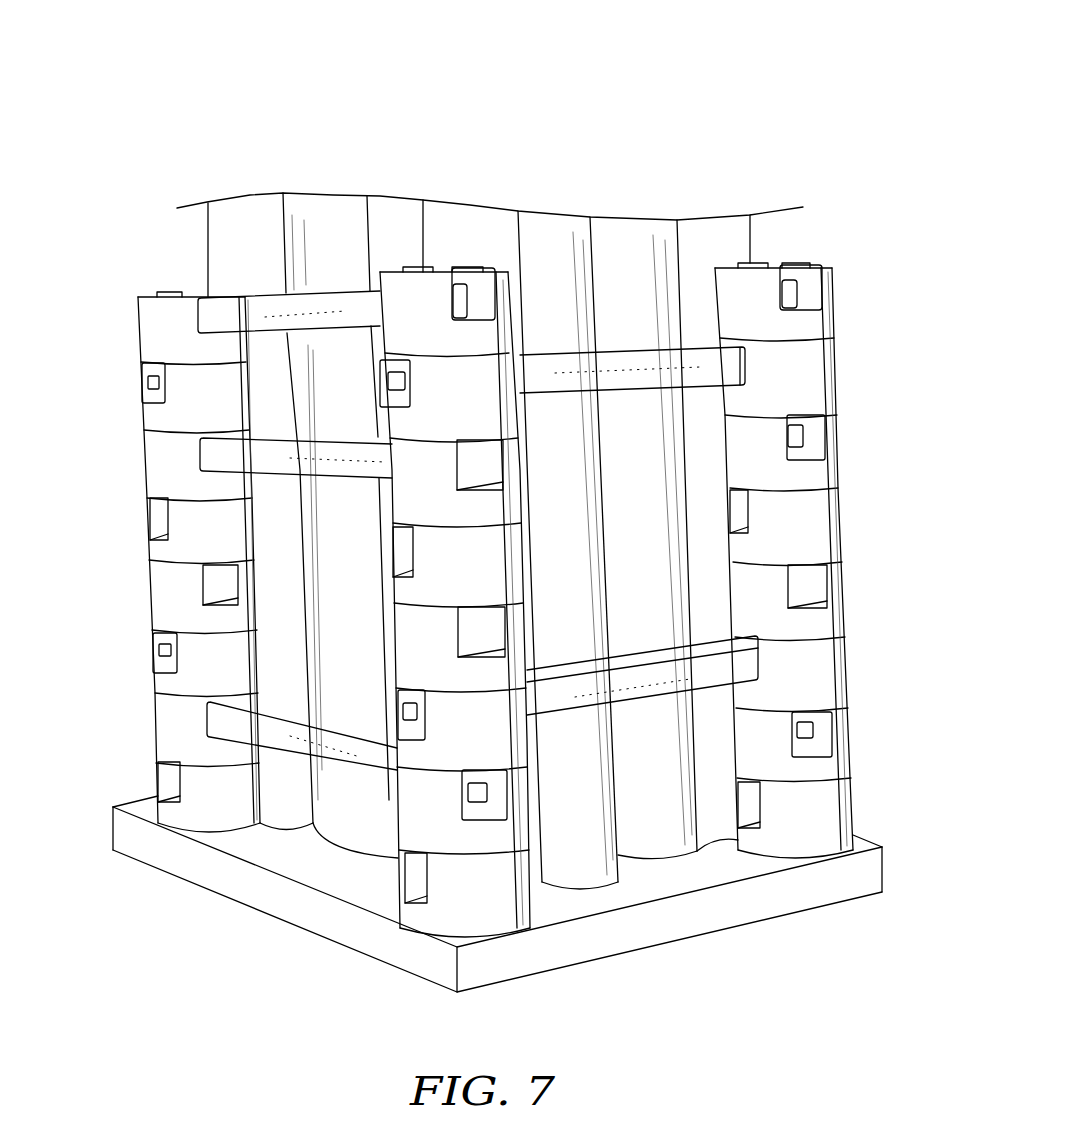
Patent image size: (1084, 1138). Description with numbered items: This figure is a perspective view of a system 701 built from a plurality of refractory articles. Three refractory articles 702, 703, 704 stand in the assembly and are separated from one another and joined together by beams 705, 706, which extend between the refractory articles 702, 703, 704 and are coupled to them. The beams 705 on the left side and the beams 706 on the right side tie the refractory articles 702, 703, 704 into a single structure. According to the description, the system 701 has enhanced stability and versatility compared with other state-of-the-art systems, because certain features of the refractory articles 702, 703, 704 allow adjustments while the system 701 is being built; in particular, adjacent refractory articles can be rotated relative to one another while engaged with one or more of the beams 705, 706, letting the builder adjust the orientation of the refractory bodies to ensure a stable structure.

The system 701 is at (856, 48).
The refractory article 702 is at (152, 550).
The refractory article 703 is at (403, 590).
The refractory article 704 is at (815, 513).
The beam 705 is at (257, 313).
The beam 706 is at (634, 376).